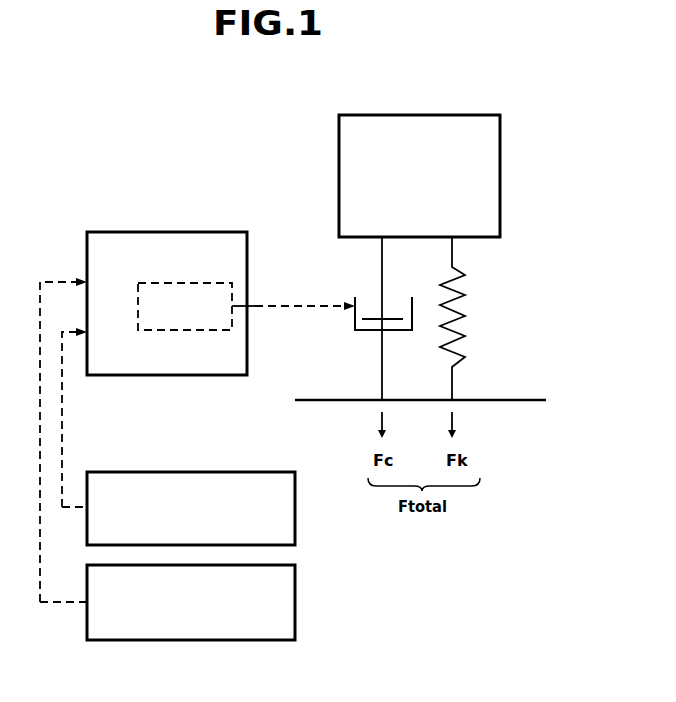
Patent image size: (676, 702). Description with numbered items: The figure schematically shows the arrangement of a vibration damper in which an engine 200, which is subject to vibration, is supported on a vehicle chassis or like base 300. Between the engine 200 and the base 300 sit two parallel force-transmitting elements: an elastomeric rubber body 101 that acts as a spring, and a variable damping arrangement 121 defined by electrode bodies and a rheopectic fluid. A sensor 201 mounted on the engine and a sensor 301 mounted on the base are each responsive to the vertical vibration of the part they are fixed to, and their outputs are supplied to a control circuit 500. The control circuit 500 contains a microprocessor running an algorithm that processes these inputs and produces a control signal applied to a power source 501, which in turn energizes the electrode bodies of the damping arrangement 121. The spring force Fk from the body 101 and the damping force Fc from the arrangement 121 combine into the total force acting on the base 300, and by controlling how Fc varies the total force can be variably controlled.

The engine 200 is at (500, 186).
The base 300 is at (532, 400).
The variable damping arrangement 121 is at (356, 332).
The elastomeric body 101 is at (463, 320).
The control circuit 500 is at (168, 232).
The power source 501 is at (196, 283).
The sensor 201 is at (270, 472).
The sensor 301 is at (295, 608).